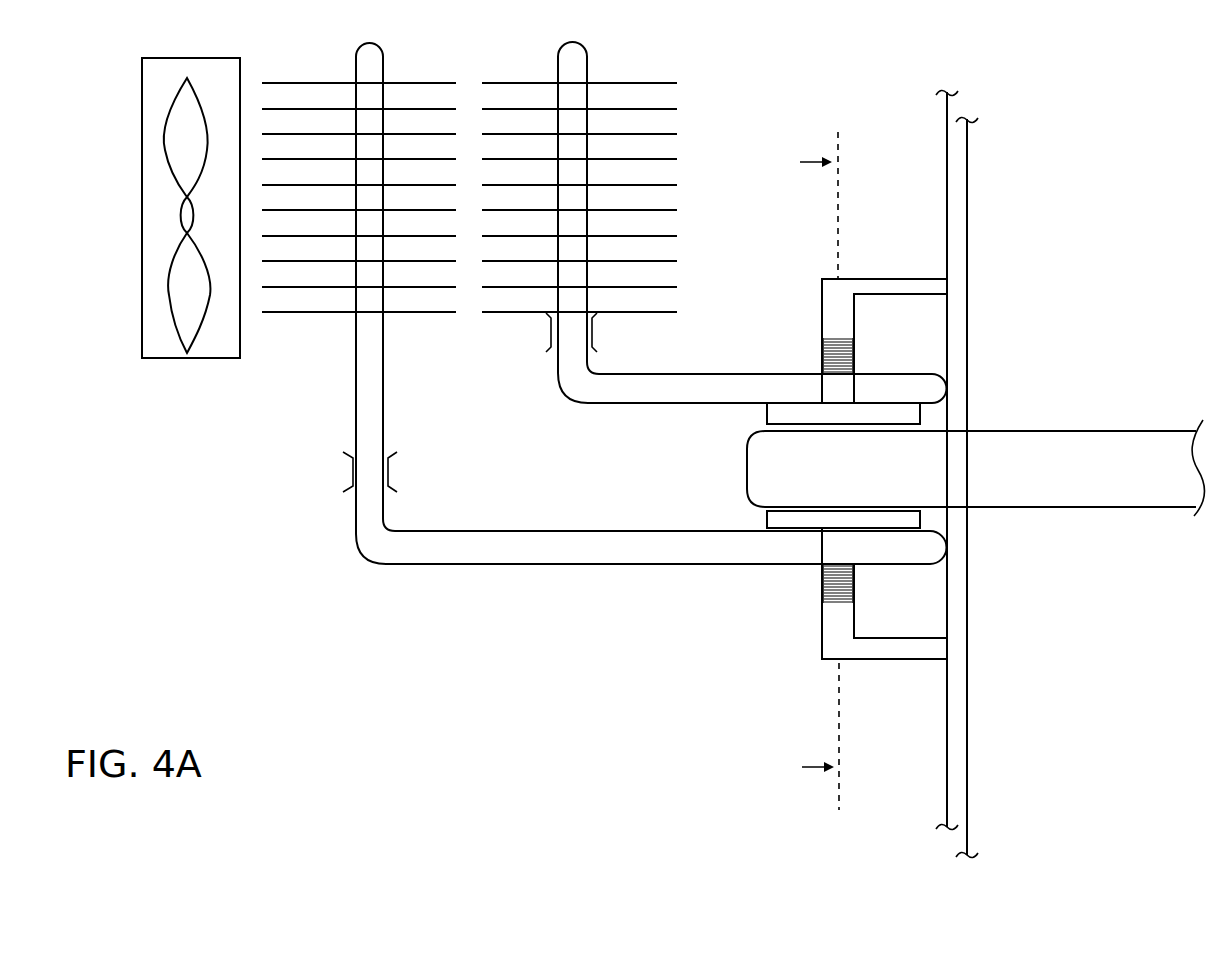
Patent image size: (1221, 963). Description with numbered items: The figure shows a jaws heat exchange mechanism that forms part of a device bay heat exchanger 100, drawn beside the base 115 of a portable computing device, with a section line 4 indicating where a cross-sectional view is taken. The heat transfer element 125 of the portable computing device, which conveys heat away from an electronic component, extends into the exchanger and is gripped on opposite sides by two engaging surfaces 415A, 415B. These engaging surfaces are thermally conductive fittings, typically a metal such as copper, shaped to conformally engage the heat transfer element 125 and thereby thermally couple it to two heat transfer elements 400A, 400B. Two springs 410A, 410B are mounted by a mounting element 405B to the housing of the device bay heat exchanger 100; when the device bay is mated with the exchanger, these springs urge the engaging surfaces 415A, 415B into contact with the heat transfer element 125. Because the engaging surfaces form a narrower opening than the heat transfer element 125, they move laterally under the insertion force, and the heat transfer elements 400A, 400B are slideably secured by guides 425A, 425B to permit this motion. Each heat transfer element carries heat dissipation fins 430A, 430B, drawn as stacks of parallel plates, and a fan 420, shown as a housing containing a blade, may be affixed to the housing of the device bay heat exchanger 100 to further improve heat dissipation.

The section line 4 is at (822, 473).
The device bay heat exchanger 100 is at (943, 120).
The base 115 is at (980, 178).
The heat transfer element 125 is at (976, 468).
The heat transfer element 400A is at (713, 367).
The heat transfer element 400B is at (698, 565).
The mounting element 405B is at (820, 280).
The spring 410A is at (865, 357).
The spring 410B is at (865, 577).
The engaging surface 415A is at (757, 413).
The engaging surface 415B is at (757, 522).
The fan 420 is at (192, 370).
The guide 425A is at (542, 332).
The guide 425B is at (402, 472).
The heat dissipation fins 430A is at (615, 68).
The heat dissipation fins 430B is at (403, 68).